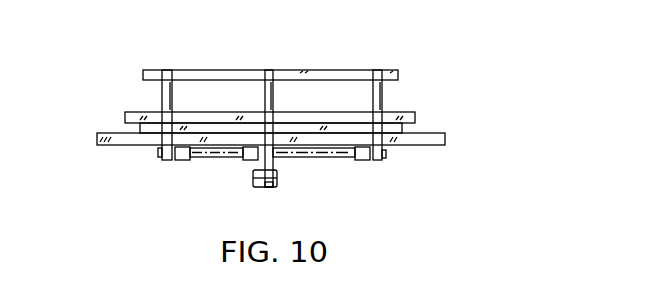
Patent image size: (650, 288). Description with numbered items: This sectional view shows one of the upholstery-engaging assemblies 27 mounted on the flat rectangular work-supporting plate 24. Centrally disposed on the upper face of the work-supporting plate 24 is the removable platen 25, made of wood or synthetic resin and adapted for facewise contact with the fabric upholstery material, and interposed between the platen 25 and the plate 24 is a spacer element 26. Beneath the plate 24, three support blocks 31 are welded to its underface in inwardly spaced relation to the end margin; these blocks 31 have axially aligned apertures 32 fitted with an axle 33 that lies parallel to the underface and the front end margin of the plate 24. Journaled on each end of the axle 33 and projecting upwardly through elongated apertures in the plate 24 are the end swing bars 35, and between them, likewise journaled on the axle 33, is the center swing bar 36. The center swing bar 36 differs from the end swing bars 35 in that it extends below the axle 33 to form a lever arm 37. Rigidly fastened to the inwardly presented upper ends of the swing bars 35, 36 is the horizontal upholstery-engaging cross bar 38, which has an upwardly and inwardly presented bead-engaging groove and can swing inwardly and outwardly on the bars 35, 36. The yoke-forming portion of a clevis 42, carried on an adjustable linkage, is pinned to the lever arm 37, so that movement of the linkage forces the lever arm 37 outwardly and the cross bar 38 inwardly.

The upholstery-engaging assembly 27 is at (452, 46).
The upholstery-engaging cross bar 38 is at (253, 70).
The end swing bar 35 is at (162, 91).
The center swing bar 36 is at (265, 95).
The platen 25 is at (408, 111).
The spacer element 26 is at (404, 128).
The work-supporting plate 24 is at (120, 133).
The support block 31 is at (184, 161).
The aperture 32 is at (191, 160).
The axle 33 is at (285, 158).
The lever arm 37 is at (257, 182).
The clevis 42 is at (273, 188).